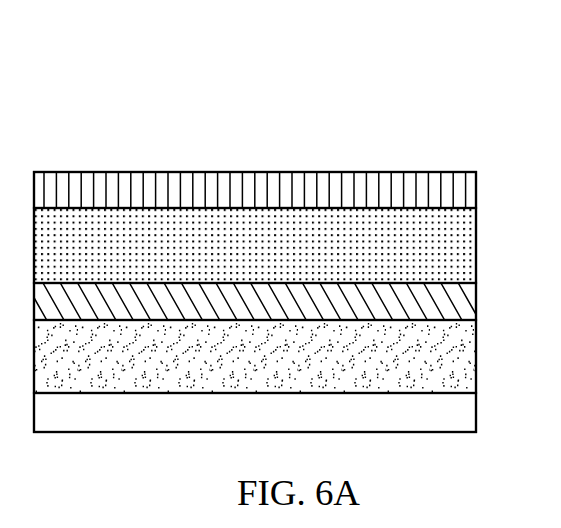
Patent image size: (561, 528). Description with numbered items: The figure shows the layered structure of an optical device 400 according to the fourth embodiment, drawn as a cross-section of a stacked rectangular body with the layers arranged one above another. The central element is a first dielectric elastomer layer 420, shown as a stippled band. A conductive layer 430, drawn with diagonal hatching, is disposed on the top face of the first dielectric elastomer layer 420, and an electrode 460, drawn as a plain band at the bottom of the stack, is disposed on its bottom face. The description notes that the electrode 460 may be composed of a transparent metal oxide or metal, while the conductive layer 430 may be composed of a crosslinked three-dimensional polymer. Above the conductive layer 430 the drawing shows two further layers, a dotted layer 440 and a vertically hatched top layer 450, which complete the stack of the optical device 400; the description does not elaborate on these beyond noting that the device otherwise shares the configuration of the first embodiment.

The optical device 400 is at (418, 127).
The top electrode layer 450 is at (470, 192).
The light emitting layer 440 is at (470, 248).
The conductive layer 430 is at (470, 304).
The first dielectric elastomer layer 420 is at (470, 357).
The electrode 460 is at (470, 412).